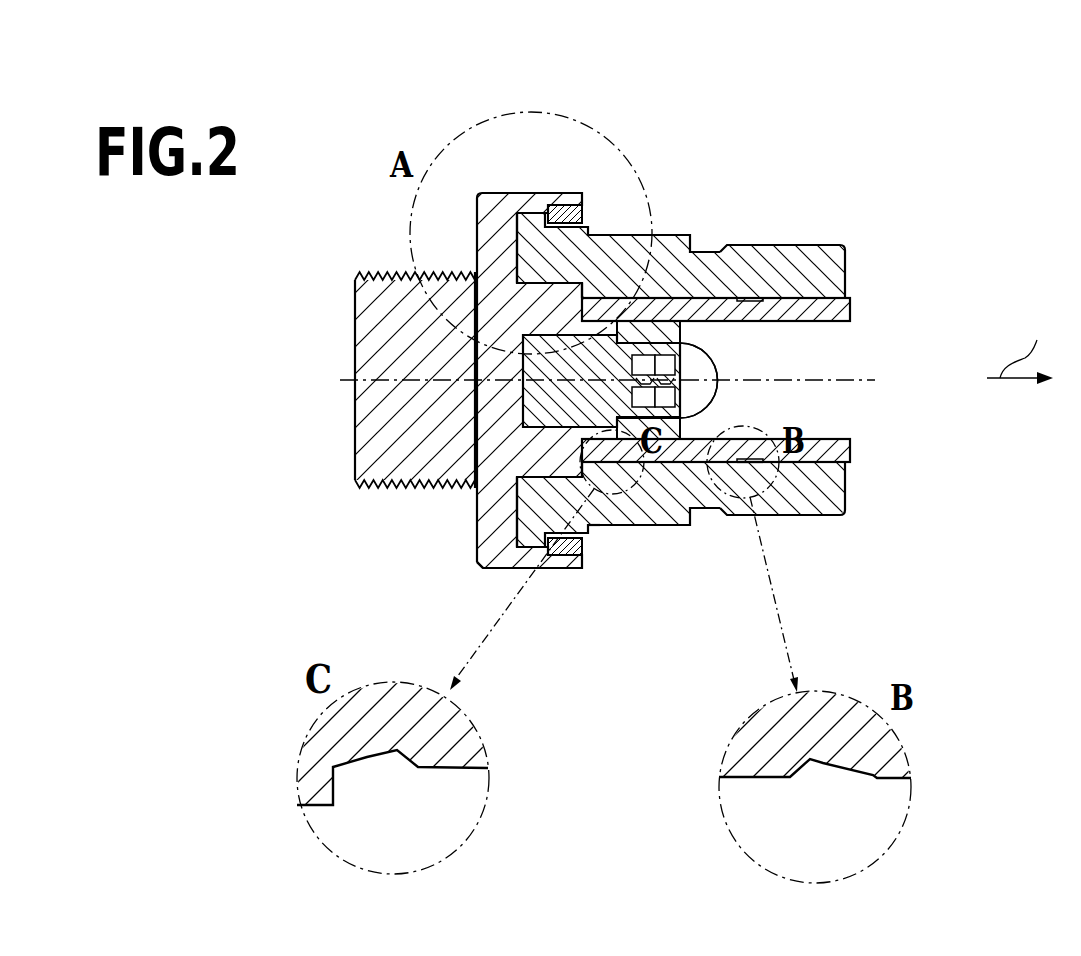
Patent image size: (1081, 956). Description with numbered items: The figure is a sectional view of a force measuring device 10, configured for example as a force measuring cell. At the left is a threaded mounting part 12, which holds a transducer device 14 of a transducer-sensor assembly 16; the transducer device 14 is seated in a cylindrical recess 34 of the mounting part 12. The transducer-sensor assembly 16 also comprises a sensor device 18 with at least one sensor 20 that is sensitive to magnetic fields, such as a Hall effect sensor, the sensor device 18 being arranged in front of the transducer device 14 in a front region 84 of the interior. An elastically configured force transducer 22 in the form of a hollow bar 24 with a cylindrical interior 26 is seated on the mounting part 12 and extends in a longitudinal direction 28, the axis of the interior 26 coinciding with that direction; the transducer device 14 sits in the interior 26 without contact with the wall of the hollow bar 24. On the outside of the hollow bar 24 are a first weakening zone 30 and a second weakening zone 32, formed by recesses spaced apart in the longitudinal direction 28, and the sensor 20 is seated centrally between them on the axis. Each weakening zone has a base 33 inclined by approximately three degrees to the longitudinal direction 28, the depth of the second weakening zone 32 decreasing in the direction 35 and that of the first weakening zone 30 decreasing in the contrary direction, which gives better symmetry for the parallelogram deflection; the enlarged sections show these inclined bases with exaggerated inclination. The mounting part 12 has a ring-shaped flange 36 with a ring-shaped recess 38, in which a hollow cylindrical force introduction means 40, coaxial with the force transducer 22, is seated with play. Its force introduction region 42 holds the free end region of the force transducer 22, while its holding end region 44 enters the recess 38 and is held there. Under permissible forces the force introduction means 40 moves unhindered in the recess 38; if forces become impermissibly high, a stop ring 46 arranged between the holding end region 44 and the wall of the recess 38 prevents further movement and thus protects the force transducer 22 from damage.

The force measuring device 10 is at (688, 153).
The mounting part 12 is at (372, 460).
The transducer device 14 is at (640, 343).
The transducer-sensor assembly 16 is at (752, 352).
The sensor device 18 is at (692, 420).
The sensor 20 is at (705, 398).
The force transducer 22 is at (853, 447).
The hollow bar 24 is at (850, 302).
The interior 26 is at (797, 372).
The longitudinal direction 28 is at (833, 382).
The first weakening zone 30 is at (600, 528).
The second weakening zone 32 is at (788, 505).
The base 33 is at (748, 468).
The cylindrical recess 34 is at (520, 465).
The direction 35 is at (1020, 346).
The ring-shaped flange 36 is at (500, 565).
The ring-shaped recess 38 is at (481, 560).
The force introduction means 40 is at (632, 510).
The force introduction region 42 is at (822, 257).
The holding end region 44 is at (518, 213).
The stop ring 46 is at (573, 205).
The front region 84 is at (701, 345).